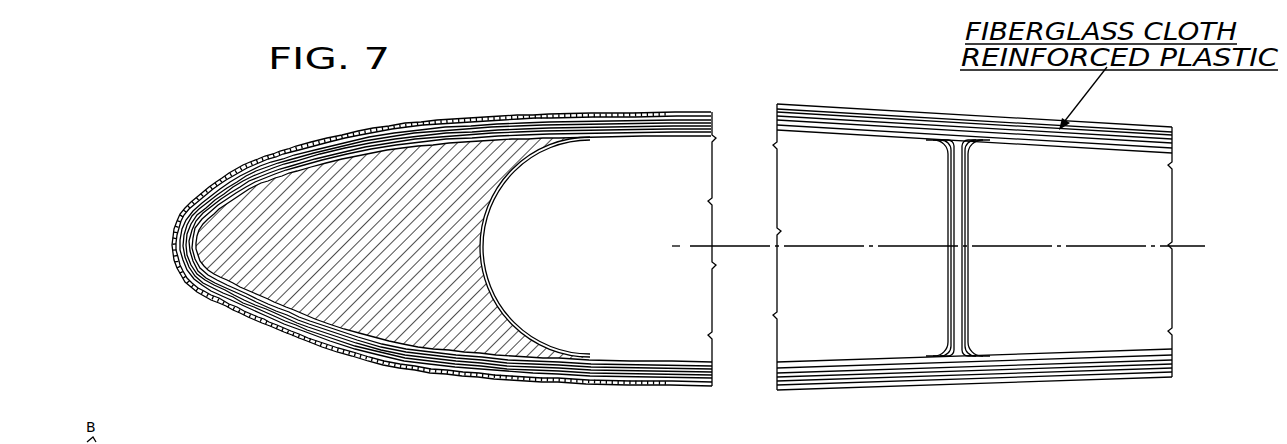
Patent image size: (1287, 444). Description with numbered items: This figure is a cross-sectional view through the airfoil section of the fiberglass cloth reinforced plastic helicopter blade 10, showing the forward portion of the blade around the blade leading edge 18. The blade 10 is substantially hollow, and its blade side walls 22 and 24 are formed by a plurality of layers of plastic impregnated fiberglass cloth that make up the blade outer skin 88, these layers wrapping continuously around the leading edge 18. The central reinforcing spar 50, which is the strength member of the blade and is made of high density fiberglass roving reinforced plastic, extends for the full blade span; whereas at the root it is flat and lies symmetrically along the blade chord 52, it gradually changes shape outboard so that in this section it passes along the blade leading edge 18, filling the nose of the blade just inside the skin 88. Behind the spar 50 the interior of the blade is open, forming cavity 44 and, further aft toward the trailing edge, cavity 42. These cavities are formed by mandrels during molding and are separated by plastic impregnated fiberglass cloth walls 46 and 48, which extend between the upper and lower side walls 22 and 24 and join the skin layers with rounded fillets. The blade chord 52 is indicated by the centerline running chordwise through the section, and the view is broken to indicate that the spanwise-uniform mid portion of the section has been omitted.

The helicopter blade 10 is at (520, 98).
The blade leading edge 18 is at (170, 241).
The blade side wall 22 is at (893, 118).
The blade side wall 24 is at (833, 382).
The cavity 42 is at (1090, 299).
The cavity 44 is at (643, 248).
The plastic impregnated fiberglass cloth wall 46 is at (964, 396).
The plastic impregnated fiberglass cloth wall 48 is at (963, 207).
The central reinforcing spar 50 is at (257, 210).
The blade chord 52 is at (747, 246).
The blade outer skin 88 is at (690, 122).